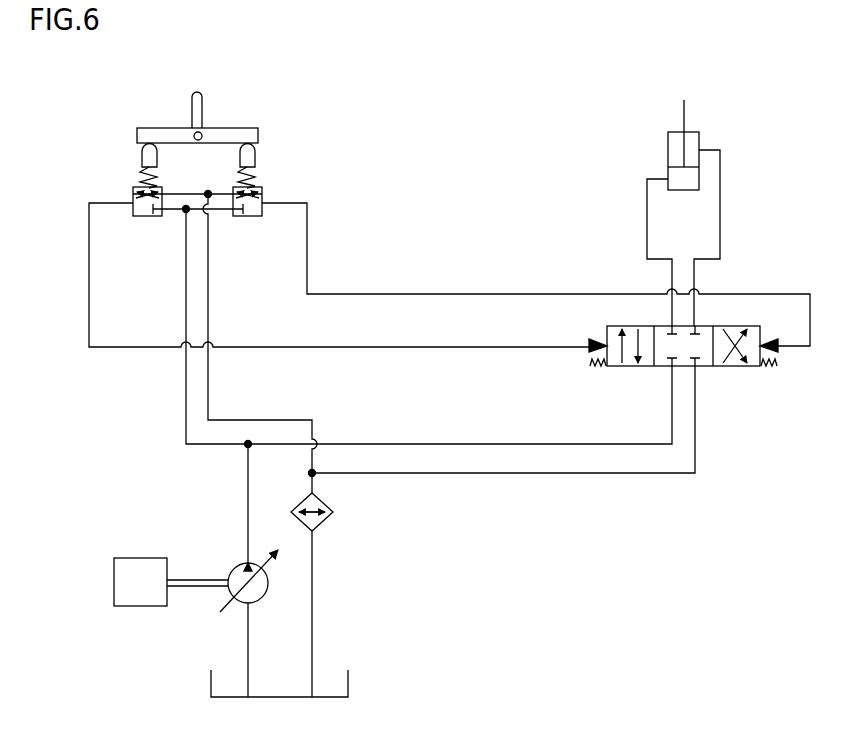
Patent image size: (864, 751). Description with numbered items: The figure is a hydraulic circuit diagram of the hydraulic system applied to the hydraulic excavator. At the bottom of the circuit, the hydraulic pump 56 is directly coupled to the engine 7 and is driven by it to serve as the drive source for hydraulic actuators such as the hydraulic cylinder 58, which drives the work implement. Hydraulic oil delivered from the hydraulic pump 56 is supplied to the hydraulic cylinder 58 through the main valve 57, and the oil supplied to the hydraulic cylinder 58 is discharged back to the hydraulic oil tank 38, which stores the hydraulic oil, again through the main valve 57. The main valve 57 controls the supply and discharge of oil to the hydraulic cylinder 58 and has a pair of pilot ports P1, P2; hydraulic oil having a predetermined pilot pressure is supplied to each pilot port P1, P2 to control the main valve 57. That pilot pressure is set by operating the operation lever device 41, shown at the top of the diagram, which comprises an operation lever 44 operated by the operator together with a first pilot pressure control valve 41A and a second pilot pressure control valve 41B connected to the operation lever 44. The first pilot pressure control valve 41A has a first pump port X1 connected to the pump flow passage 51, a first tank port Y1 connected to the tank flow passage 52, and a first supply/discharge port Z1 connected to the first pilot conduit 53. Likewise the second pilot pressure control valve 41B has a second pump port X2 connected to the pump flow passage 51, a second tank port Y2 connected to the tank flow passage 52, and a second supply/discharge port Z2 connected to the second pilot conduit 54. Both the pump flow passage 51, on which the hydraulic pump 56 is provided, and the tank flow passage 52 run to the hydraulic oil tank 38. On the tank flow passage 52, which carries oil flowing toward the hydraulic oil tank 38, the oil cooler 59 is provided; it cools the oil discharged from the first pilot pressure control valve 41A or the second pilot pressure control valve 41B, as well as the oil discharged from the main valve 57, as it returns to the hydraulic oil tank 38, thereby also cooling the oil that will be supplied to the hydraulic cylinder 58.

The operation lever device 41 is at (132, 110).
The operation lever 44 is at (204, 100).
The first pilot pressure control valve 41A is at (133, 191).
The second pilot pressure control valve 41B is at (262, 191).
The first tank port Y1 is at (168, 193).
The second tank port Y2 is at (229, 193).
The first supply/discharge port Z1 is at (132, 204).
The first pump port X1 is at (161, 211).
The second pump port X2 is at (234, 211).
The second supply/discharge port Z2 is at (263, 204).
The first pilot conduit 53 is at (88, 264).
The second pilot conduit 54 is at (309, 261).
The hydraulic cylinder 58 is at (660, 133).
The main valve 57 is at (722, 378).
The pilot port P1 is at (601, 338).
The pilot port P2 is at (781, 352).
The pump flow passage 51 is at (247, 487).
The tank flow passage 52 is at (313, 583).
The oil cooler 59 is at (323, 527).
The hydraulic pump 56 is at (236, 563).
The engine 7 is at (138, 608).
The hydraulic oil tank 38 is at (282, 698).